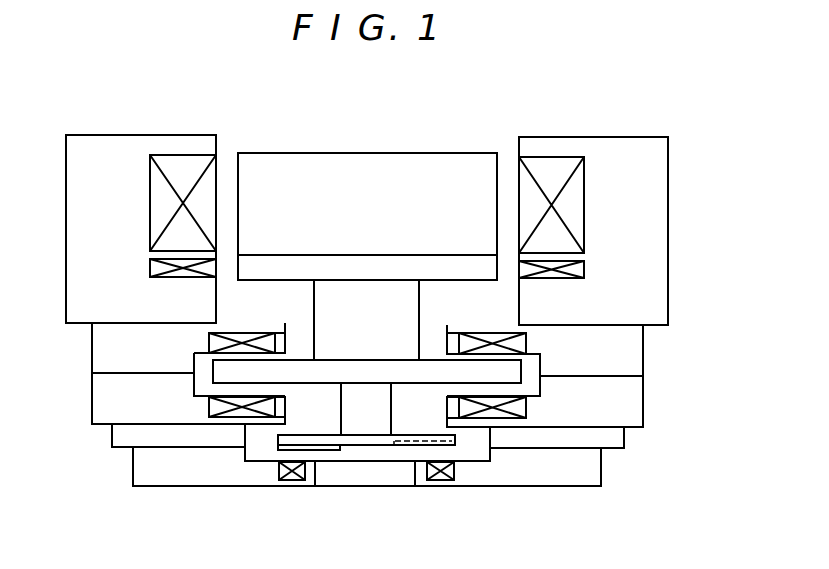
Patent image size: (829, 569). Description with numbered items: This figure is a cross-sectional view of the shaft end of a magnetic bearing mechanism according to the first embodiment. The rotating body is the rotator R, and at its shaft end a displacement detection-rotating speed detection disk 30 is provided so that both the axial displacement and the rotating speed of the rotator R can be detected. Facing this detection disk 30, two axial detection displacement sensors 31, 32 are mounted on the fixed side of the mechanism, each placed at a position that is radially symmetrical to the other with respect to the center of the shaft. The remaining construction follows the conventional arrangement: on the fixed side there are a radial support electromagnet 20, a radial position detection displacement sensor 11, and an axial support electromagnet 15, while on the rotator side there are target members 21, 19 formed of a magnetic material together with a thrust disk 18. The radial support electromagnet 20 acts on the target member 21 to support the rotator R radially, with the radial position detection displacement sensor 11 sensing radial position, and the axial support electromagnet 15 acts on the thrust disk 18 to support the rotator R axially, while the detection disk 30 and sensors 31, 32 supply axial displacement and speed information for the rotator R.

The rotator R is at (308, 153).
The radial position detection displacement sensor 11 is at (584, 265).
The axial support electromagnet 15 is at (526, 343).
The thrust disk 18 is at (213, 368).
The target member 19 is at (496, 263).
The radial support electromagnet 20 is at (584, 210).
The target member 21 is at (500, 165).
The displacement detection-rotating speed detection disk 30 is at (417, 435).
The axial detection displacement sensor 31 is at (440, 487).
The axial detection displacement sensor 32 is at (296, 487).